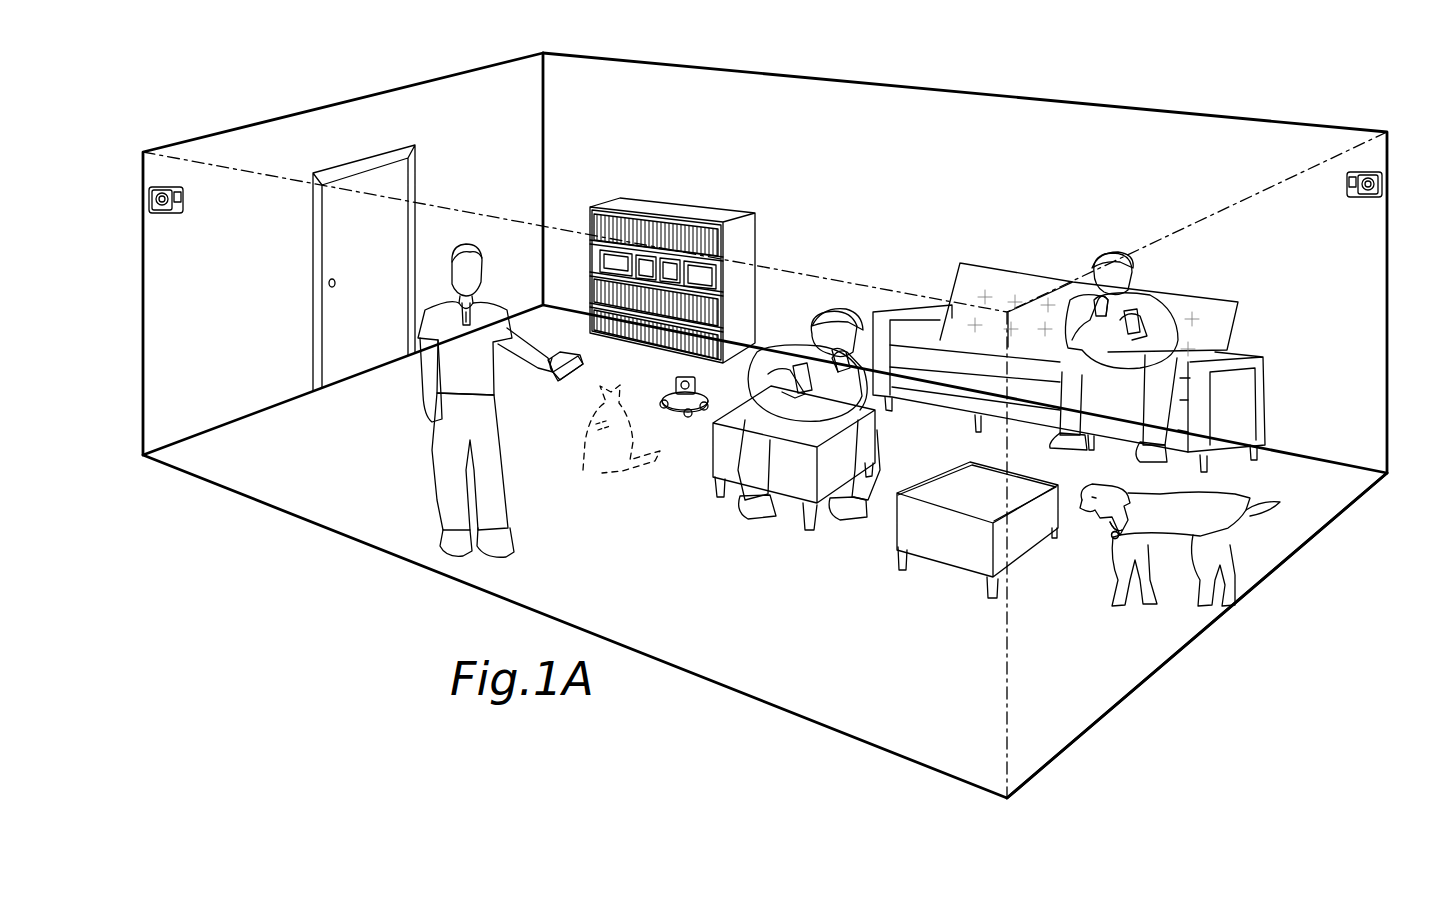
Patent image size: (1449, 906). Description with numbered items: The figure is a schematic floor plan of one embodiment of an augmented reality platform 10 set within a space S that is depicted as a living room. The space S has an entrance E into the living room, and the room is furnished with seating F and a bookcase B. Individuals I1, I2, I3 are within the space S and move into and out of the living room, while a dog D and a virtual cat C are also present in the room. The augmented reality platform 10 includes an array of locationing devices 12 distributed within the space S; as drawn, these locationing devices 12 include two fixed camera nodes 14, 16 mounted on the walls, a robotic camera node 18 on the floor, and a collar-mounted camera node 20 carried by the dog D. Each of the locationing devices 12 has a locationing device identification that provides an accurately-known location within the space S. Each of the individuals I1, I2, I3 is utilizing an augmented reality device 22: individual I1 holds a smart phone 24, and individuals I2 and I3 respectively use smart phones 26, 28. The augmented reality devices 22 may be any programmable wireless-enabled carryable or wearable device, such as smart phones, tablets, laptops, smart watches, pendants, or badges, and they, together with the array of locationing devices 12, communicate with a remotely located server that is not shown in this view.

The augmented reality platform 10 is at (1073, 86).
The locationing devices 12 is at (166, 172).
The camera node 14 is at (170, 213).
The camera node 16 is at (1366, 198).
The robotic camera node 18 is at (689, 416).
The collar-mounted camera node 20 is at (1126, 493).
The augmented reality device 22 is at (565, 350).
The smart phone 24 is at (566, 381).
The smart phone 26 is at (843, 366).
The smart phone 28 is at (1100, 308).
The entrance E is at (410, 186).
The bookcase B is at (757, 248).
The virtual cat C is at (584, 468).
The dog D is at (1117, 538).
The seating F is at (941, 540).
The space S is at (1158, 648).
The individual I1 is at (440, 428).
The individual I2 is at (797, 347).
The individual I3 is at (1148, 300).